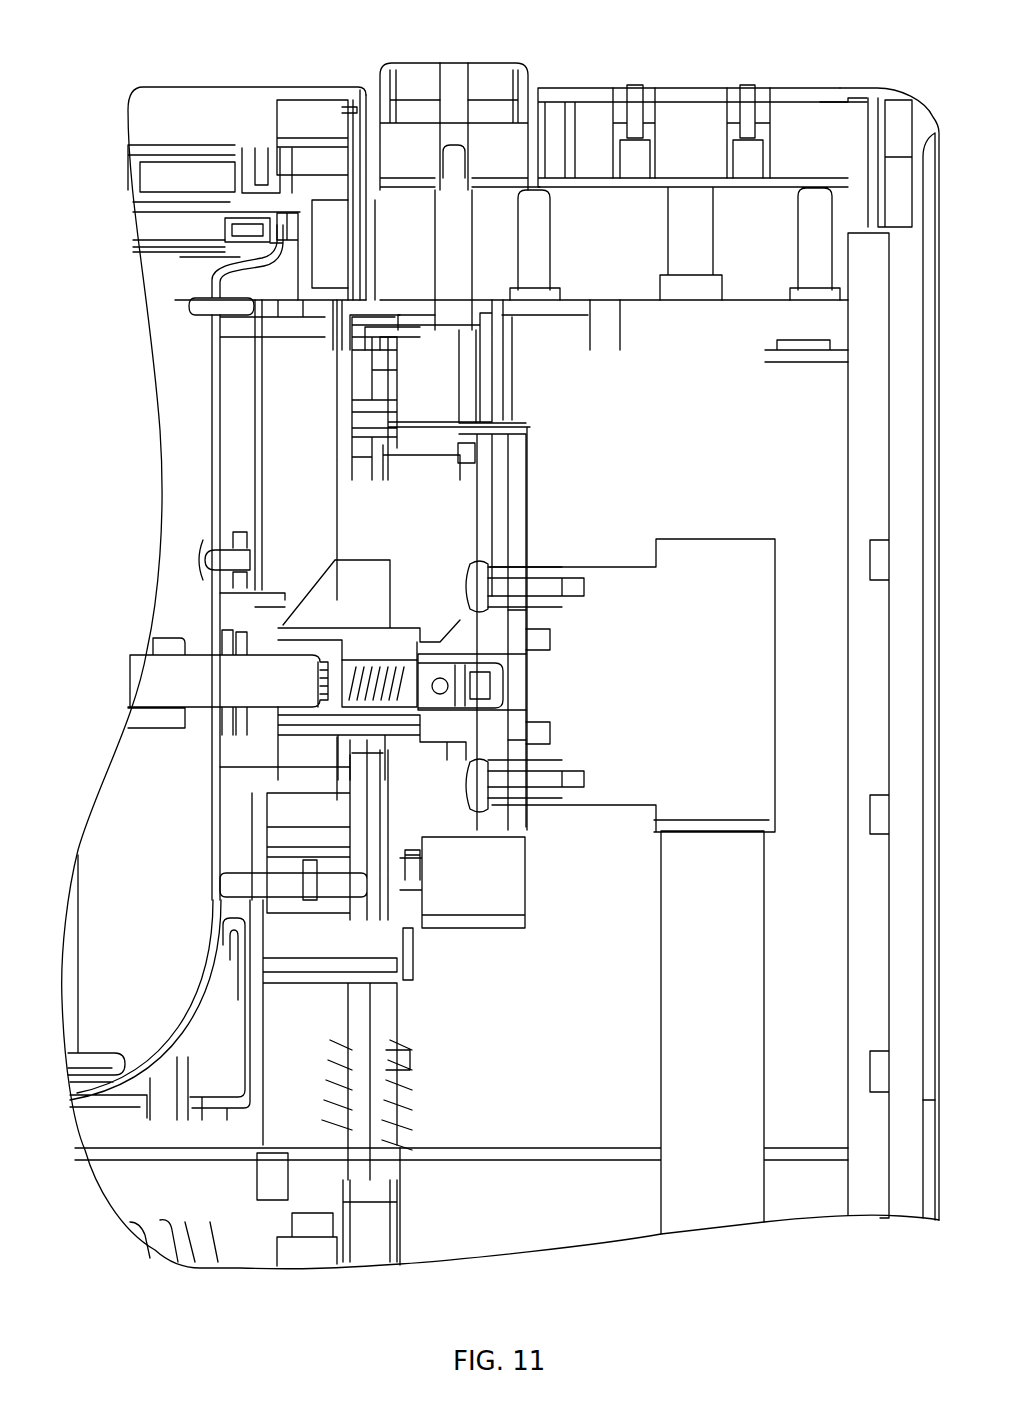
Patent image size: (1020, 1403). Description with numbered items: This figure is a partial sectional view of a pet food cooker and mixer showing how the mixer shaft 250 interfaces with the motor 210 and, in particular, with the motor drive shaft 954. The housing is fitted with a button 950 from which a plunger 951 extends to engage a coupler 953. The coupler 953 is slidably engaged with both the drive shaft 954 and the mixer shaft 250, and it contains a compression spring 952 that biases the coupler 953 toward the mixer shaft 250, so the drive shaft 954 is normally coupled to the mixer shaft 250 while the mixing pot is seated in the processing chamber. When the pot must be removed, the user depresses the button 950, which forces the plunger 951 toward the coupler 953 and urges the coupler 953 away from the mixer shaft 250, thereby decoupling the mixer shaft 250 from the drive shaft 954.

The button 950 is at (483, 62).
The plunger 951 is at (458, 225).
The compression spring 952 is at (362, 668).
The coupler 953 is at (446, 735).
The motor drive shaft 954 is at (505, 689).
The mixer shaft 250 is at (160, 685).
The motor 210 is at (624, 886).